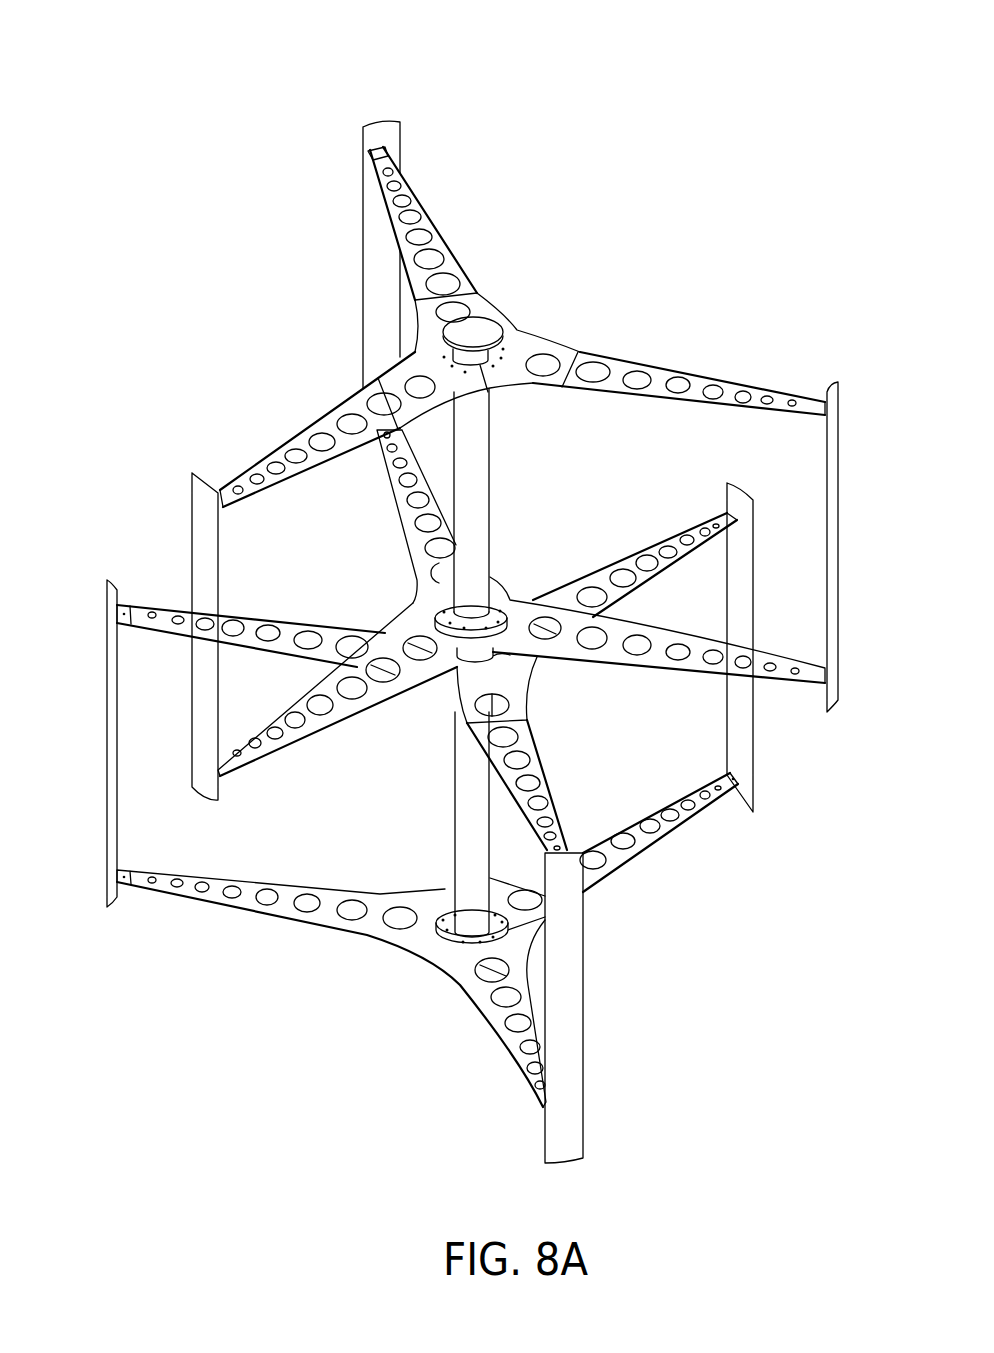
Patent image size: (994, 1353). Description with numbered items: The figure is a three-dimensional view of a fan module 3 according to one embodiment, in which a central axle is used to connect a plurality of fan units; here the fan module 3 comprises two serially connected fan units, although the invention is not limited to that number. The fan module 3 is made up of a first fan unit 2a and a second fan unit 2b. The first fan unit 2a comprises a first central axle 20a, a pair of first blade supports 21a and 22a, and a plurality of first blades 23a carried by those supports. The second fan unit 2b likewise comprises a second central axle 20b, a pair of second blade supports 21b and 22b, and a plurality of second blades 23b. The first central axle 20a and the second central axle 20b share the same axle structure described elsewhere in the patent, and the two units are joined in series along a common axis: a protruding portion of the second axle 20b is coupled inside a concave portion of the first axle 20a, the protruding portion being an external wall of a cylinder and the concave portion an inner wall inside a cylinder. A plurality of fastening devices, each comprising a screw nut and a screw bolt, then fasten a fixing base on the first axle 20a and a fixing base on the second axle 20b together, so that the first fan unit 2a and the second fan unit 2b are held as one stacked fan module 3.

The fan module 3 is at (256, 150).
The first fan unit 2a is at (147, 585).
The second fan unit 2b is at (367, 112).
The first central axle 20a is at (463, 783).
The second central axle 20b is at (482, 505).
The first blade support 21a is at (547, 788).
The second blade support 21b is at (477, 297).
The first blade support 22a is at (453, 962).
The second blade support 22b is at (388, 472).
The first blades 23a is at (573, 1090).
The second blades 23b is at (832, 485).